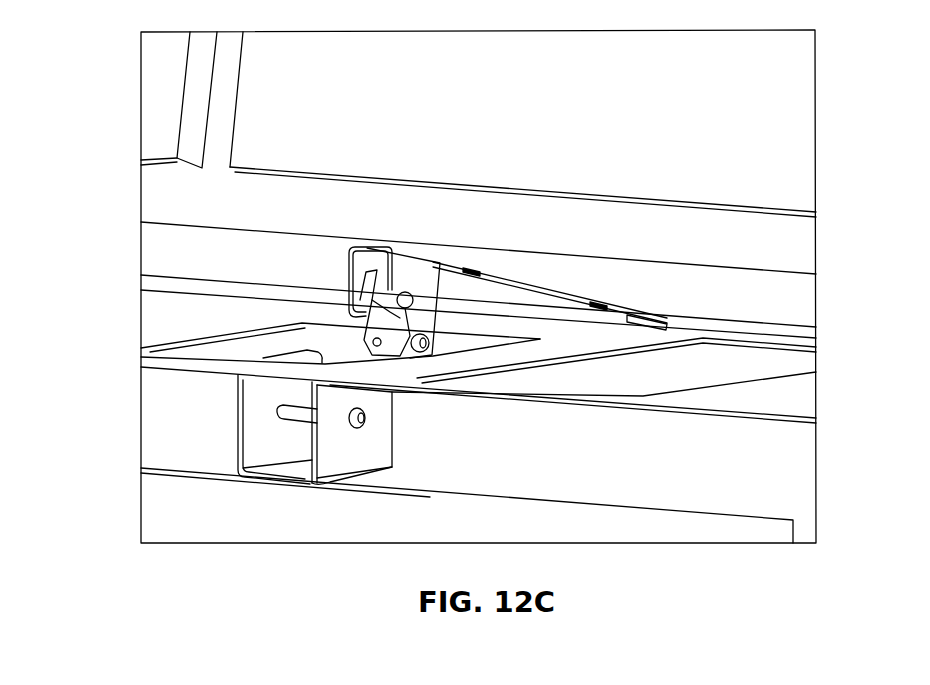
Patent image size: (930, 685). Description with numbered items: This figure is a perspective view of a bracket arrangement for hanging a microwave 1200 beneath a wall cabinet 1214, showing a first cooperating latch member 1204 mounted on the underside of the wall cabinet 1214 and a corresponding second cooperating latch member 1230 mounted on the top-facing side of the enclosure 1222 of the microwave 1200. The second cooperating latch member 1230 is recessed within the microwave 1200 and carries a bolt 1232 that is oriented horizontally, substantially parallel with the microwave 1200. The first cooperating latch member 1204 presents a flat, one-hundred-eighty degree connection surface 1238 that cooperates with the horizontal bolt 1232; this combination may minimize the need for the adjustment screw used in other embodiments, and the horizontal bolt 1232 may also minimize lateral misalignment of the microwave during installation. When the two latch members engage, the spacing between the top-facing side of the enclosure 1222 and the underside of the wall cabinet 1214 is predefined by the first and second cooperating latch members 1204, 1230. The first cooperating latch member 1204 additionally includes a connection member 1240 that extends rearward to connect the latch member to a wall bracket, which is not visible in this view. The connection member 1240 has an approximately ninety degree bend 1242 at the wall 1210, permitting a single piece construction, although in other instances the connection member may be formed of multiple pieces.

The microwave 1200 is at (180, 518).
The first cooperating latch member 1204 is at (395, 232).
The wall 1210 is at (153, 283).
The wall cabinet 1214 is at (678, 272).
The enclosure 1222 is at (157, 315).
The second cooperating latch member 1230 is at (380, 407).
The bolt 1232 is at (277, 411).
The connection surface 1238 is at (375, 245).
The connection member 1240 is at (497, 272).
The bend 1242 is at (655, 325).